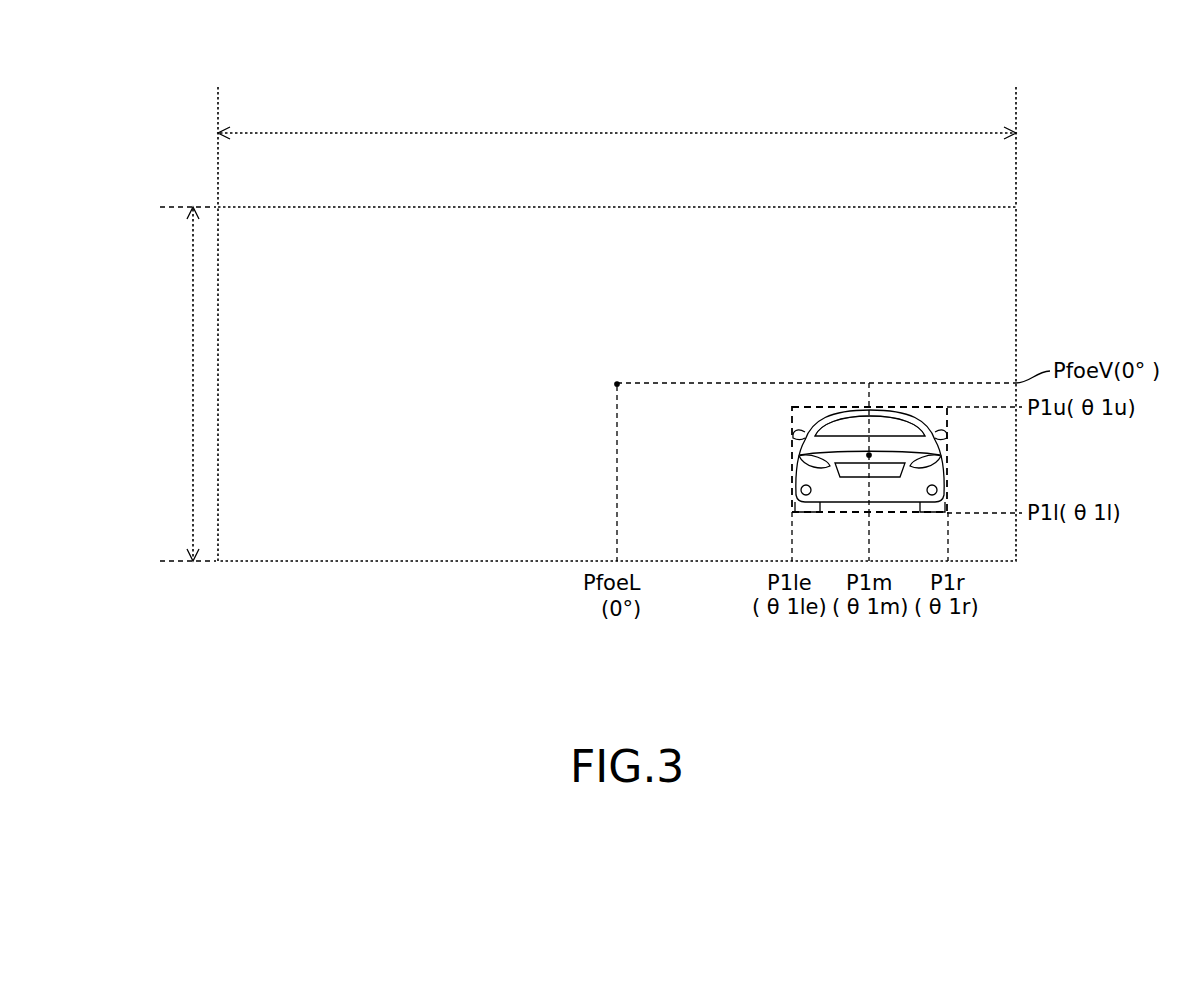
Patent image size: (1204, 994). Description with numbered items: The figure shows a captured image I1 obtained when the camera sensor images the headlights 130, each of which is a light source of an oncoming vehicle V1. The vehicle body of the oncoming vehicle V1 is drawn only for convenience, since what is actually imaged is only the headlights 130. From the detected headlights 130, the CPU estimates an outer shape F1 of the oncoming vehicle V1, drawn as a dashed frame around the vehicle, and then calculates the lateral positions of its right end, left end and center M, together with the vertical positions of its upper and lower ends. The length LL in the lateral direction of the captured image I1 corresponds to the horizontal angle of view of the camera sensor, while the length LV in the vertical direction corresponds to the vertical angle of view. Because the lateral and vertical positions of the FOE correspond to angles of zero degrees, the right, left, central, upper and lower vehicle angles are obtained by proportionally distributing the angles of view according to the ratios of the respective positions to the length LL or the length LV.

The headlights 130 is at (795, 457).
The captured image I1 is at (298, 207).
The outer shape F1 is at (920, 407).
The oncoming vehicle V1 is at (813, 434).
The center M is at (869, 453).
The element FOE is at (617, 382).
The length in the lateral direction LL is at (617, 123).
The length in the vertical direction LV is at (185, 384).